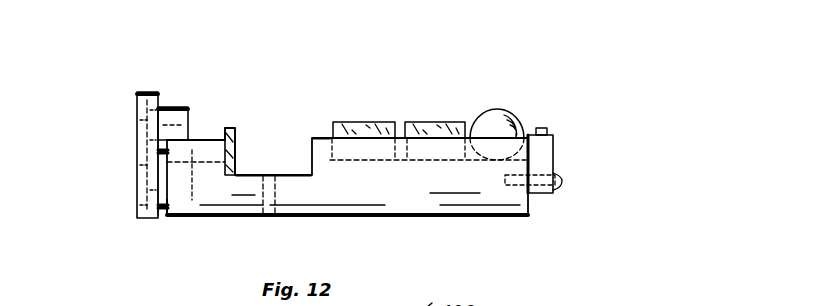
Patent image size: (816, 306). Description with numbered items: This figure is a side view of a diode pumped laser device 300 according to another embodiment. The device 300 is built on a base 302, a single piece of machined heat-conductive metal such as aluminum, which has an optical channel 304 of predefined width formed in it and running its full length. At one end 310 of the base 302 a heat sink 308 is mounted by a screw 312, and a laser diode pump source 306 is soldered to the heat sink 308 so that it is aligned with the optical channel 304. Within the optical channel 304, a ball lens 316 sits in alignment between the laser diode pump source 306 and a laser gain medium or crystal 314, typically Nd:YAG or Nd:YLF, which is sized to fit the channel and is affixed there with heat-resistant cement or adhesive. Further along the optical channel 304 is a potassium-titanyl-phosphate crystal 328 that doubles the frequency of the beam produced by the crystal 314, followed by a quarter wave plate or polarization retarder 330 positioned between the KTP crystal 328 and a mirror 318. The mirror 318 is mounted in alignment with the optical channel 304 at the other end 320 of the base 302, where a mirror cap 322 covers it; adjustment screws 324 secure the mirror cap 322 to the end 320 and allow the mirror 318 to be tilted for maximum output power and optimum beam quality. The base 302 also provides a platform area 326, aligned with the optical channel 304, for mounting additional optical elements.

The diode pumped laser device 300 is at (326, 62).
The base 302 is at (480, 218).
The optical channel 304 is at (240, 152).
The laser diode pump source 306 is at (545, 122).
The heat sink 308 is at (545, 153).
The end of the base 310 is at (530, 205).
The screw 312 is at (560, 185).
The laser gain medium or crystal 314 is at (437, 128).
The ball lens 316 is at (495, 118).
The mirror 318 is at (180, 115).
The other end of the base 320 is at (166, 214).
The mirror cap 322 is at (137, 103).
The adjustment screws 324 is at (140, 152).
The platform area 326 is at (274, 153).
The KTP crystal 328 is at (372, 130).
The quarter wave plate or polarization retarder 330 is at (229, 127).